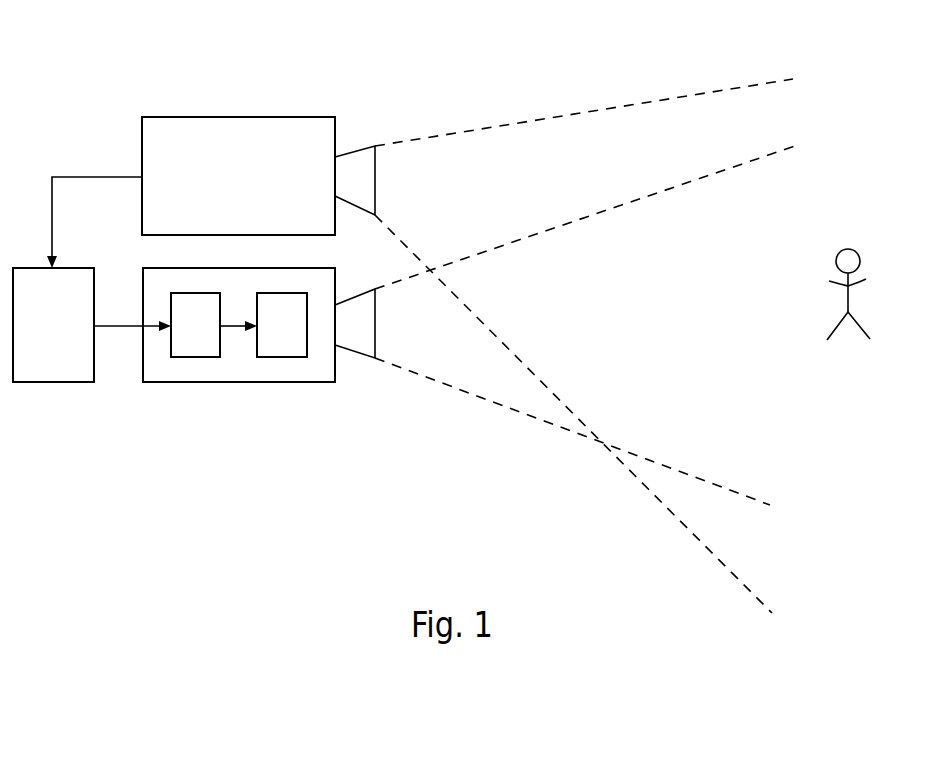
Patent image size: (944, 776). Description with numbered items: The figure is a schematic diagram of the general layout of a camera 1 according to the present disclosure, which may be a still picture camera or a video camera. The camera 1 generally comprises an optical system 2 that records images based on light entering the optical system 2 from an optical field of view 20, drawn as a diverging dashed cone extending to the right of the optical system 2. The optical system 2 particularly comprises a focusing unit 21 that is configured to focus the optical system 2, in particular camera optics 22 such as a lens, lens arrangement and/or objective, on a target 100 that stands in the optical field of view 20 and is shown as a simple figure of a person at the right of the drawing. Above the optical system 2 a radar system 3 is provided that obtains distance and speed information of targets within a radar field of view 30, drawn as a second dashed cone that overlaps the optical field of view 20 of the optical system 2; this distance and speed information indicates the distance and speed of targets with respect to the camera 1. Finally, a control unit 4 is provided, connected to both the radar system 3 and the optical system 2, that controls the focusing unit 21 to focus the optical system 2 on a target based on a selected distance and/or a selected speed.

The camera 1 is at (121, 50).
The optical system 2 is at (172, 383).
The radar system 3 is at (262, 117).
The control unit 4 is at (45, 383).
The optical field of view 20 is at (478, 398).
The focusing unit 21 is at (205, 357).
The camera optics 22 is at (283, 357).
The radar field of view 30 is at (547, 118).
The target 100 is at (860, 257).